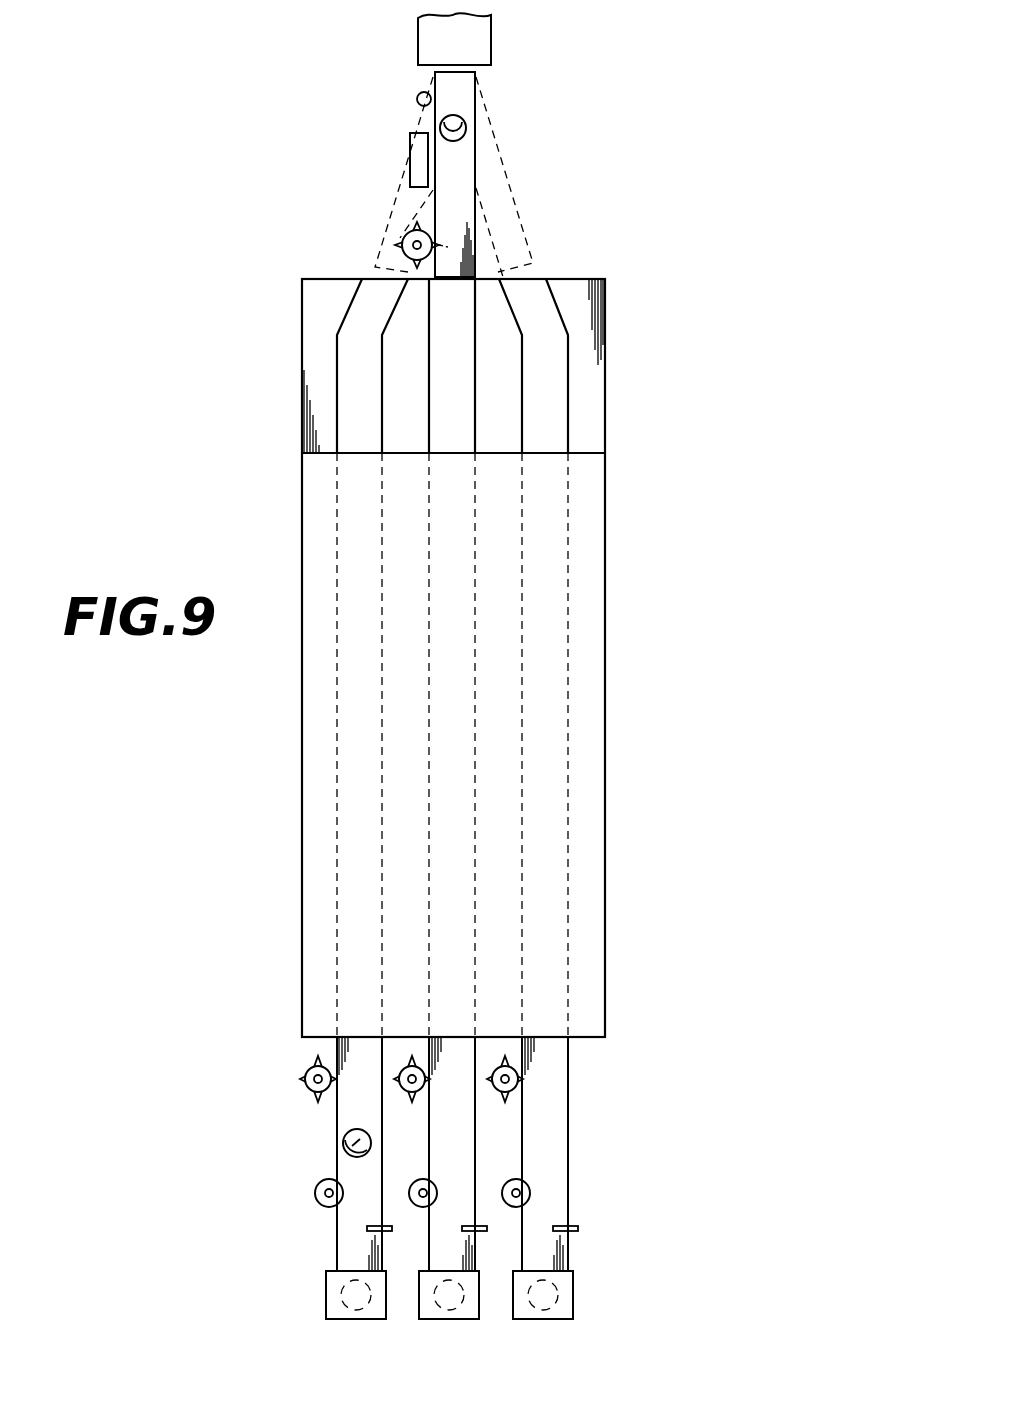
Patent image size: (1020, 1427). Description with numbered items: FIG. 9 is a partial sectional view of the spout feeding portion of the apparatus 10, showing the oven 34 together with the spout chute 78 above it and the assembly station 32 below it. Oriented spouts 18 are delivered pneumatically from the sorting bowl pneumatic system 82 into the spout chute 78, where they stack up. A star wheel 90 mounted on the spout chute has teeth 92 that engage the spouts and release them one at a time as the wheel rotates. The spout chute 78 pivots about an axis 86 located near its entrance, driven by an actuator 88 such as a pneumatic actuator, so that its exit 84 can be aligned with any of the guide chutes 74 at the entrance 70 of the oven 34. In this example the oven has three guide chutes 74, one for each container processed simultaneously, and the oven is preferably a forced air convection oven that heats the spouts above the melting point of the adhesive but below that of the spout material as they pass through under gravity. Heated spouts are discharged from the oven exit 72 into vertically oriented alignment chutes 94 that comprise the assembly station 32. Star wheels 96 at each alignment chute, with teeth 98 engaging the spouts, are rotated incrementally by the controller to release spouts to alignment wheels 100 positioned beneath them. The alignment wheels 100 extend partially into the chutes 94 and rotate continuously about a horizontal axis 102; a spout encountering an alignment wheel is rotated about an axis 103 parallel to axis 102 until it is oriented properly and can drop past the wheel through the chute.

The apparatus 10 is at (663, 41).
The spout 18 is at (463, 132).
The assembly station 32 is at (607, 1187).
The oven 34 is at (593, 790).
The entrance 70 is at (540, 270).
The exit 72 is at (578, 1047).
The guide chutes 74 is at (557, 408).
The spout chute 78 is at (467, 105).
The sorting bowl pneumatic system 82 is at (482, 37).
The exit 84 is at (458, 272).
The axis 86 is at (417, 99).
The actuator 88 is at (413, 174).
The star wheel 90 is at (407, 238).
The teeth 92 is at (395, 247).
The alignment chutes 94 is at (563, 1127).
The star wheels 96 is at (305, 1078).
The teeth 98 is at (318, 1097).
The alignment wheels 100 is at (320, 1193).
The horizontal axis 102 is at (325, 1203).
The axis 103 is at (352, 1146).